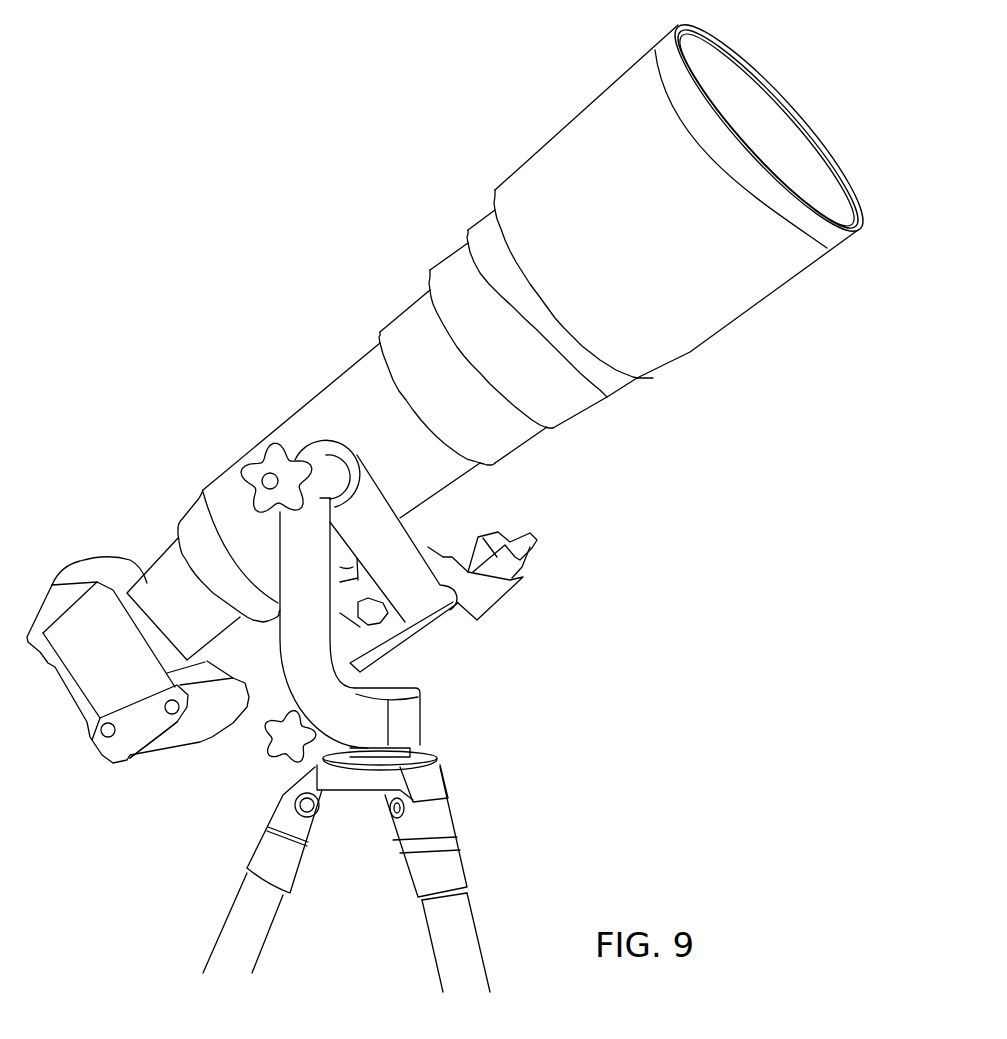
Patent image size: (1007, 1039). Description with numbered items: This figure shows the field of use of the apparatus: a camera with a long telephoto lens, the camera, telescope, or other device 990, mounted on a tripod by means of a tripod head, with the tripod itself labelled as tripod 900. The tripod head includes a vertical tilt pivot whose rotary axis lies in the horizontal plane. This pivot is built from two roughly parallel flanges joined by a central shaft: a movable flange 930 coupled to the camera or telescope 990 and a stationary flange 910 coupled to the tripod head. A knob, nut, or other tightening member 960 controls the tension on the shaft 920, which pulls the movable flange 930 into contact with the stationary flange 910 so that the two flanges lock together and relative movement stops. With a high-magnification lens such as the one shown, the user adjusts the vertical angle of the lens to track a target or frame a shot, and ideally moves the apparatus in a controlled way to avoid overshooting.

The tripod 900 is at (457, 817).
The stationary flange 910 is at (297, 453).
The shaft 920 is at (265, 478).
The movable flange 930 is at (343, 447).
The tightening member 960 is at (241, 472).
The camera, telescope, or other device 990 is at (593, 403).